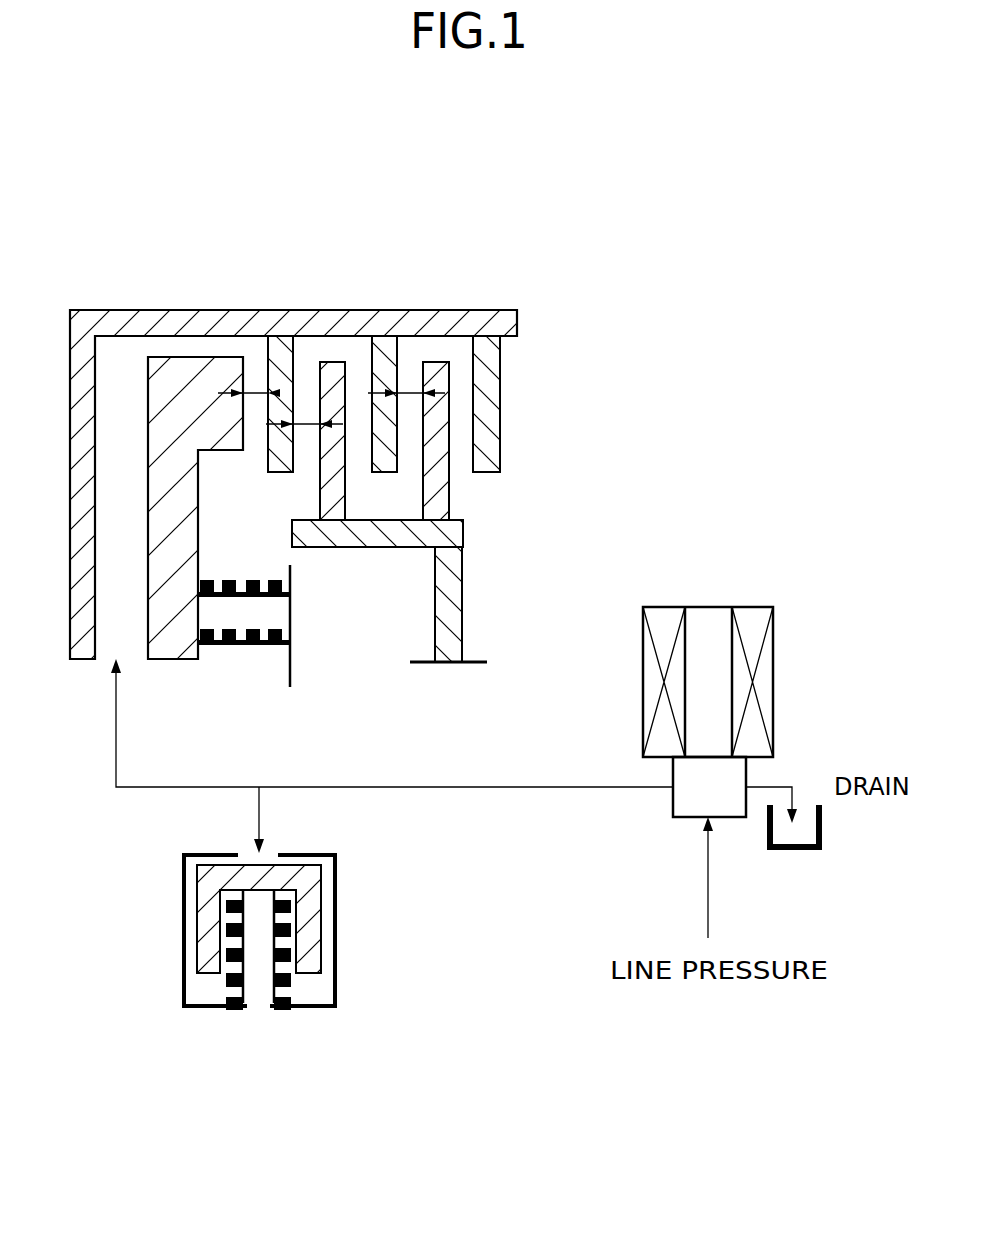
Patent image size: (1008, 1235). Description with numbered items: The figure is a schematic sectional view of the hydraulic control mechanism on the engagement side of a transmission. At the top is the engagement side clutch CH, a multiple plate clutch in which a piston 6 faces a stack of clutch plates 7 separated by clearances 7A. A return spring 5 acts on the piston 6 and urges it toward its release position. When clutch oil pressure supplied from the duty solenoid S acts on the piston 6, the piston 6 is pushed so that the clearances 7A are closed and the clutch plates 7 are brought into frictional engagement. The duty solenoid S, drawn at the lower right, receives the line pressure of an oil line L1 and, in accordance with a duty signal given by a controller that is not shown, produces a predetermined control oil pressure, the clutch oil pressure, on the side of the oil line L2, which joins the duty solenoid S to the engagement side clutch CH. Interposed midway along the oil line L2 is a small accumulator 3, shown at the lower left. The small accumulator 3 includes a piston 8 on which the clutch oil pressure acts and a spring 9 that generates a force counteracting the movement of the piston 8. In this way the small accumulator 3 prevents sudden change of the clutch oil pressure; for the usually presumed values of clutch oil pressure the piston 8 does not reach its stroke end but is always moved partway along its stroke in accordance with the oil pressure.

The engagement side clutch CH is at (491, 303).
The piston 6 is at (195, 356).
The clutch plates 7 is at (403, 360).
The clearances 7A is at (410, 392).
The return spring 5 is at (227, 648).
The duty solenoid S is at (755, 598).
The oil line L2 is at (480, 784).
The oil line L1 is at (708, 902).
The small accumulator 3 is at (343, 940).
The piston 8 is at (207, 921).
The spring 9 is at (228, 976).